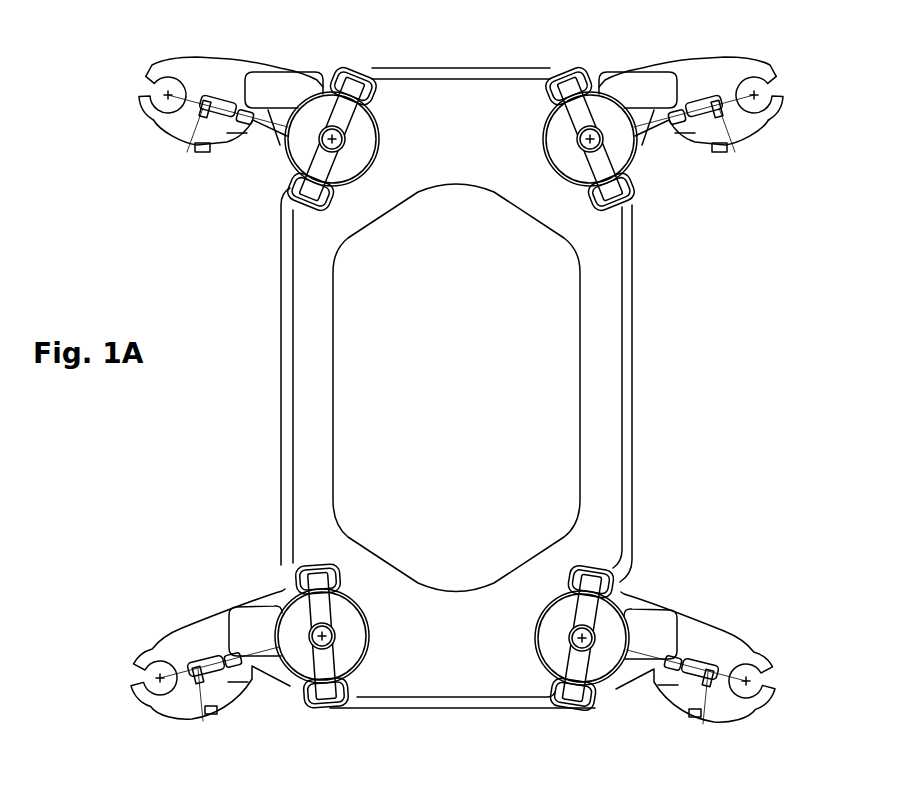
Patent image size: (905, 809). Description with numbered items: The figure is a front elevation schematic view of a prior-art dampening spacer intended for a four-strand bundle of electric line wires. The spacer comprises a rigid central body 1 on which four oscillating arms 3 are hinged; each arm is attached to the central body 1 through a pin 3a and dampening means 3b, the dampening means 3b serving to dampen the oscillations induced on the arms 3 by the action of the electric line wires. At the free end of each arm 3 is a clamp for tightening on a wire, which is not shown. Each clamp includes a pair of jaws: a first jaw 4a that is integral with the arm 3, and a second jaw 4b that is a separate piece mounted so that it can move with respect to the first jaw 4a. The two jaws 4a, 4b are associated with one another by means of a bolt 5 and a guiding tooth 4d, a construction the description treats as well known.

The rigid central body 1 is at (628, 412).
The oscillating arms 3 is at (242, 77).
The pin 3a is at (322, 142).
The dampening means 3b is at (620, 155).
The first jaw 4a is at (767, 78).
The second jaw 4b is at (772, 117).
The guiding tooth 4d is at (695, 143).
The bolt 5 is at (725, 157).